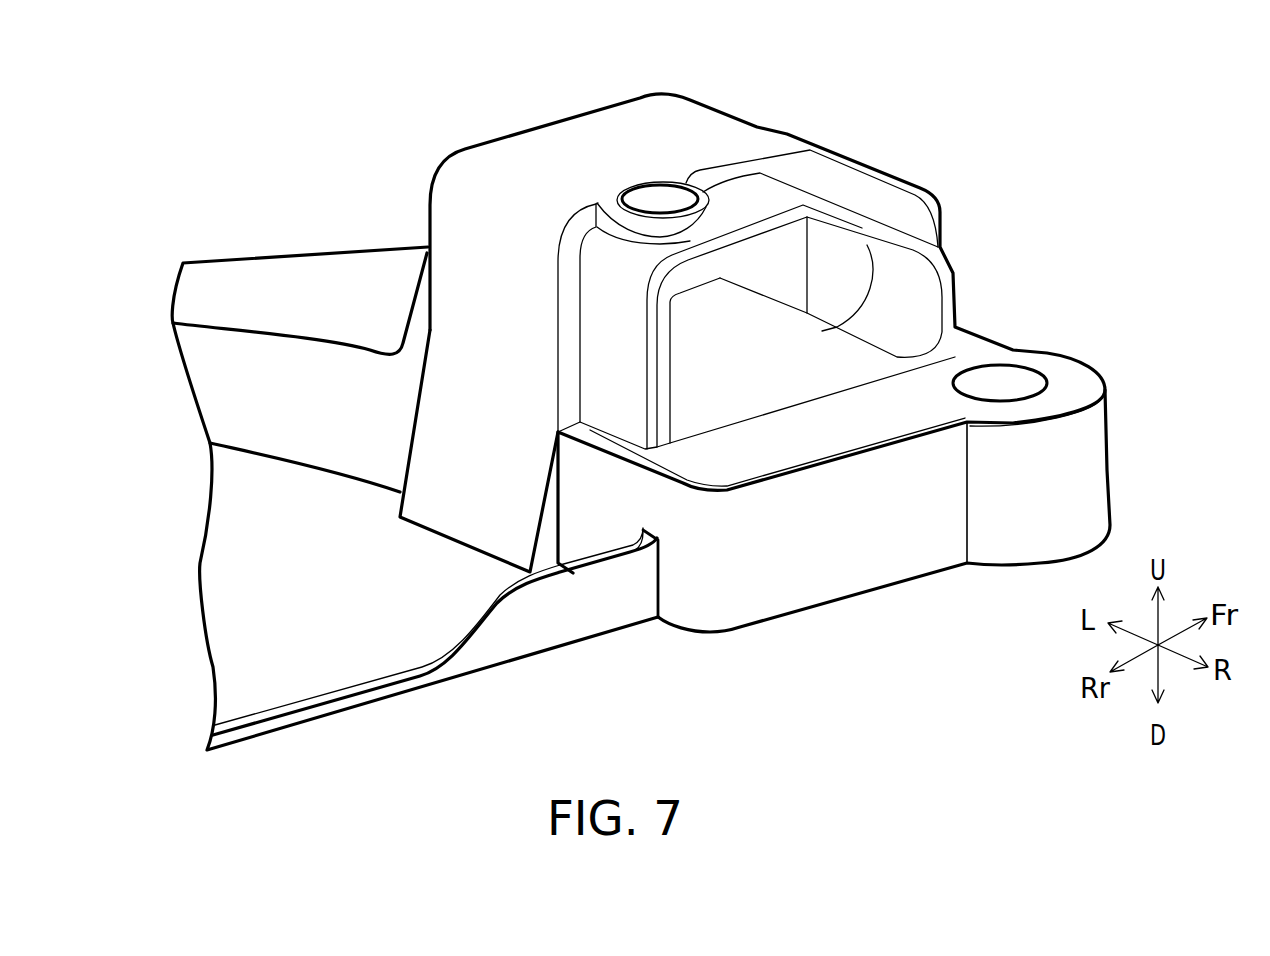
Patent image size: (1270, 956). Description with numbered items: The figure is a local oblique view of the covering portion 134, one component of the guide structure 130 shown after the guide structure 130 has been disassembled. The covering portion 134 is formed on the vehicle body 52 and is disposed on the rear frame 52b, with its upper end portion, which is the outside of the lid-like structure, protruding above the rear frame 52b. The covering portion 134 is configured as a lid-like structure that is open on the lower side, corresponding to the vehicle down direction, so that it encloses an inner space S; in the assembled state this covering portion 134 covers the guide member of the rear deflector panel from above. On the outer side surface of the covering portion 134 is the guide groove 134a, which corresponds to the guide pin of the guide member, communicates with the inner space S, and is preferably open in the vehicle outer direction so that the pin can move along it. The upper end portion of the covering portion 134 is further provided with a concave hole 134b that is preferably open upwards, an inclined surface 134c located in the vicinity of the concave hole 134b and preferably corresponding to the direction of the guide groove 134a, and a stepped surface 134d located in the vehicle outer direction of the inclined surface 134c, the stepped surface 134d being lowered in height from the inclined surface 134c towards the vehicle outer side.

The covering portion 134 is at (521, 143).
The guide structure 130 is at (755, 330).
The rear frame 52b is at (260, 290).
The vehicle body 52 is at (415, 456).
The guide groove 134a is at (904, 304).
The concave hole 134b is at (669, 190).
The inclined surface 134c is at (719, 126).
The stepped surface 134d is at (866, 208).
The inner space S is at (782, 283).